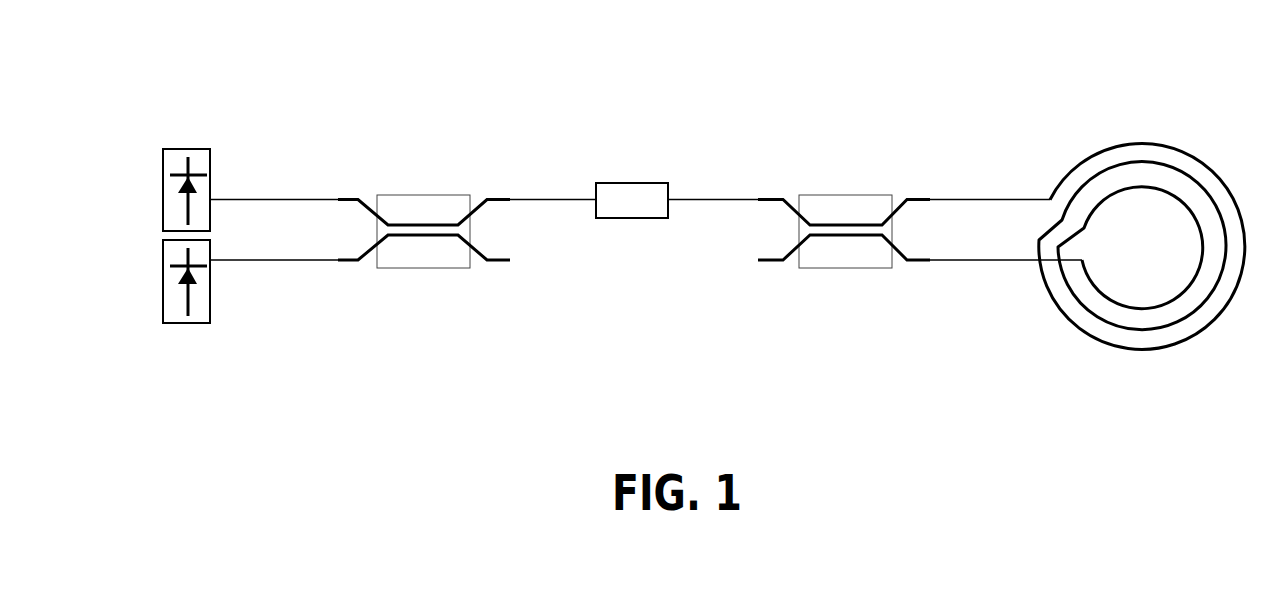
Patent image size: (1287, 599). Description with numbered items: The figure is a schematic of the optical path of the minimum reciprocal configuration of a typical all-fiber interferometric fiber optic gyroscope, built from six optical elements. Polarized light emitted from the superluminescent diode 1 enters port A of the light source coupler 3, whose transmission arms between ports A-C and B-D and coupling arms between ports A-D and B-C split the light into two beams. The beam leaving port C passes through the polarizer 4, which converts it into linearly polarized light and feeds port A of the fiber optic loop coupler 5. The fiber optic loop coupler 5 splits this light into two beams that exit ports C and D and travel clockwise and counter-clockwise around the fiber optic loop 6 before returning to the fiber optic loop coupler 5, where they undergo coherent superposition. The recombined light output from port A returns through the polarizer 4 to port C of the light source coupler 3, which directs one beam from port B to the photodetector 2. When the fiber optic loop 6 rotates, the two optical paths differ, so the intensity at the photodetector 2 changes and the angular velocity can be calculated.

The superluminescent diode 1 is at (187, 137).
The photodetector 2 is at (187, 337).
The light source coupler 3 is at (423, 185).
The polarizer 4 is at (638, 182).
The fiber optic loop coupler 5 is at (833, 185).
The fiber optic loop 6 is at (1065, 167).